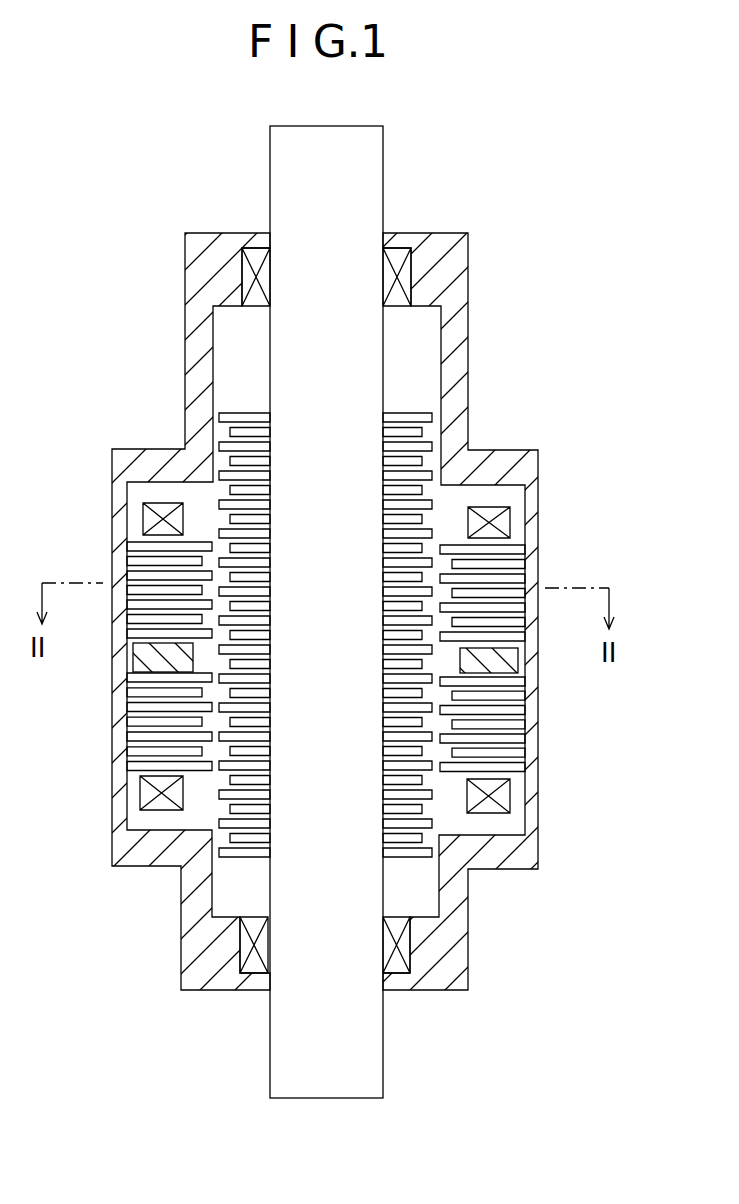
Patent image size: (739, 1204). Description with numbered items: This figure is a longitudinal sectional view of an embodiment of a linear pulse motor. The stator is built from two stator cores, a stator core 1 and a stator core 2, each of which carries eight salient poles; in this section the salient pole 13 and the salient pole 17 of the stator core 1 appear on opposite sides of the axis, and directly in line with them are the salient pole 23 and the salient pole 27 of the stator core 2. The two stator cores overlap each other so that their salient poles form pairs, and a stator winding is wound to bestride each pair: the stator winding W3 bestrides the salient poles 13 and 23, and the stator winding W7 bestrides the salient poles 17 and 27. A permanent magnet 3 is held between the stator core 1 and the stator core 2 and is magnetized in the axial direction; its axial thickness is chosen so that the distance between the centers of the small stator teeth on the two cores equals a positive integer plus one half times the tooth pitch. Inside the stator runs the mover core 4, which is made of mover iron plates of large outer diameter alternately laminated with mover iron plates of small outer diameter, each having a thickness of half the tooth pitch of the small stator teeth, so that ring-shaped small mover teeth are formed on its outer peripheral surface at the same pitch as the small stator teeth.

The stator core 1 is at (530, 512).
The stator core 2 is at (527, 745).
The permanent magnet 3 is at (508, 663).
The mover core 4 is at (410, 858).
The salient pole 13 is at (472, 585).
The salient pole 17 is at (183, 575).
The salient pole 23 is at (477, 725).
The salient pole 27 is at (187, 727).
The stator winding W3 is at (492, 512).
The stator winding W7 is at (162, 507).